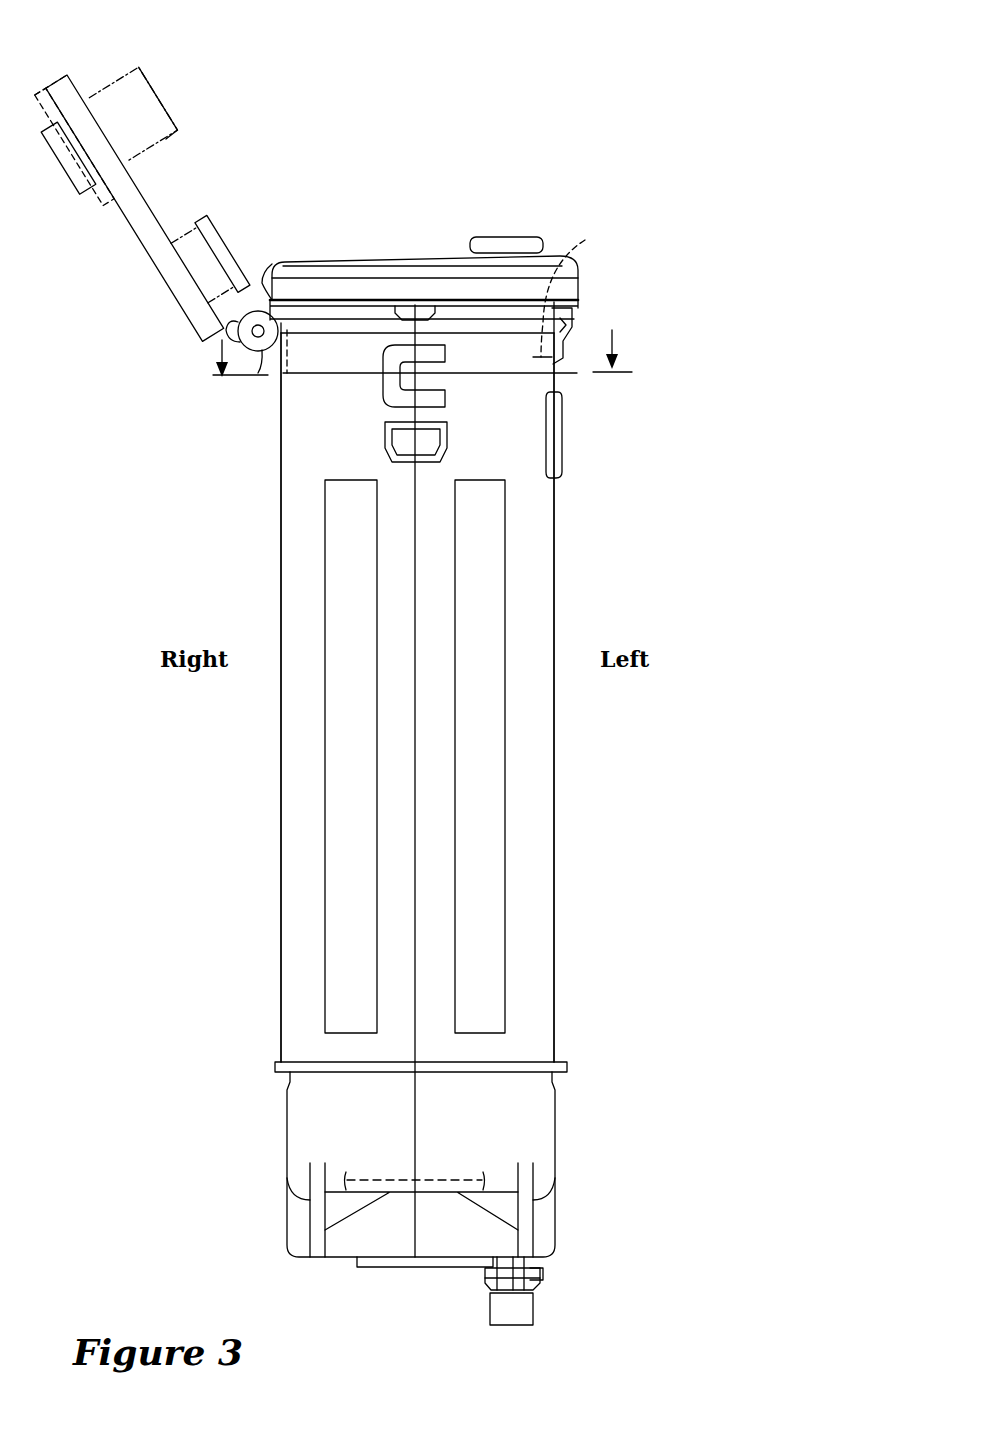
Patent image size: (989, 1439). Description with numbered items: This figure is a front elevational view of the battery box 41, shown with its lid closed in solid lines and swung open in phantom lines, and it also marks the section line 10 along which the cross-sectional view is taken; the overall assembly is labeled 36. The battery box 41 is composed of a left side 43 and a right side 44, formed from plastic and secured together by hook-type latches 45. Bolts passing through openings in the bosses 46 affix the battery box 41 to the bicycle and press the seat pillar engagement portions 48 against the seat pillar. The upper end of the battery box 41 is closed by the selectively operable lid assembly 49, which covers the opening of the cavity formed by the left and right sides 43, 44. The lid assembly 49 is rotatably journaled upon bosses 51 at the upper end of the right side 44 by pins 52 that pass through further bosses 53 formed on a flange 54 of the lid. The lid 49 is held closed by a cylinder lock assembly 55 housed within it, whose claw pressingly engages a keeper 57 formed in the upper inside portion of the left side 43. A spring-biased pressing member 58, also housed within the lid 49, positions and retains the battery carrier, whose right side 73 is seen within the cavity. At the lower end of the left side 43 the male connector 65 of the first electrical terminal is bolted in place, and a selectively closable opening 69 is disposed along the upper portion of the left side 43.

The section line 10- 10 is at (424, 372).
The container assembly 36 is at (500, 158).
The battery box 41 is at (615, 420).
The left side 43 is at (555, 940).
The right side 44 is at (281, 940).
The hook-type latch 45 is at (406, 386).
The boss 46 is at (287, 1200).
The seat pillar engagement portion 48 is at (325, 777).
The selectively operable lid assembly 49 is at (413, 233).
The boss 51 is at (280, 262).
The pin 52 is at (260, 372).
The boss 53 is at (186, 328).
The flange 54 is at (573, 288).
The cylinder lock assembly 55 is at (512, 237).
The keeper 57 is at (585, 240).
The spring-biased pressing member 58 is at (90, 107).
The male connector 65 is at (533, 1306).
The selectively closable opening 69 is at (566, 462).
The right side 73 is at (363, 1180).